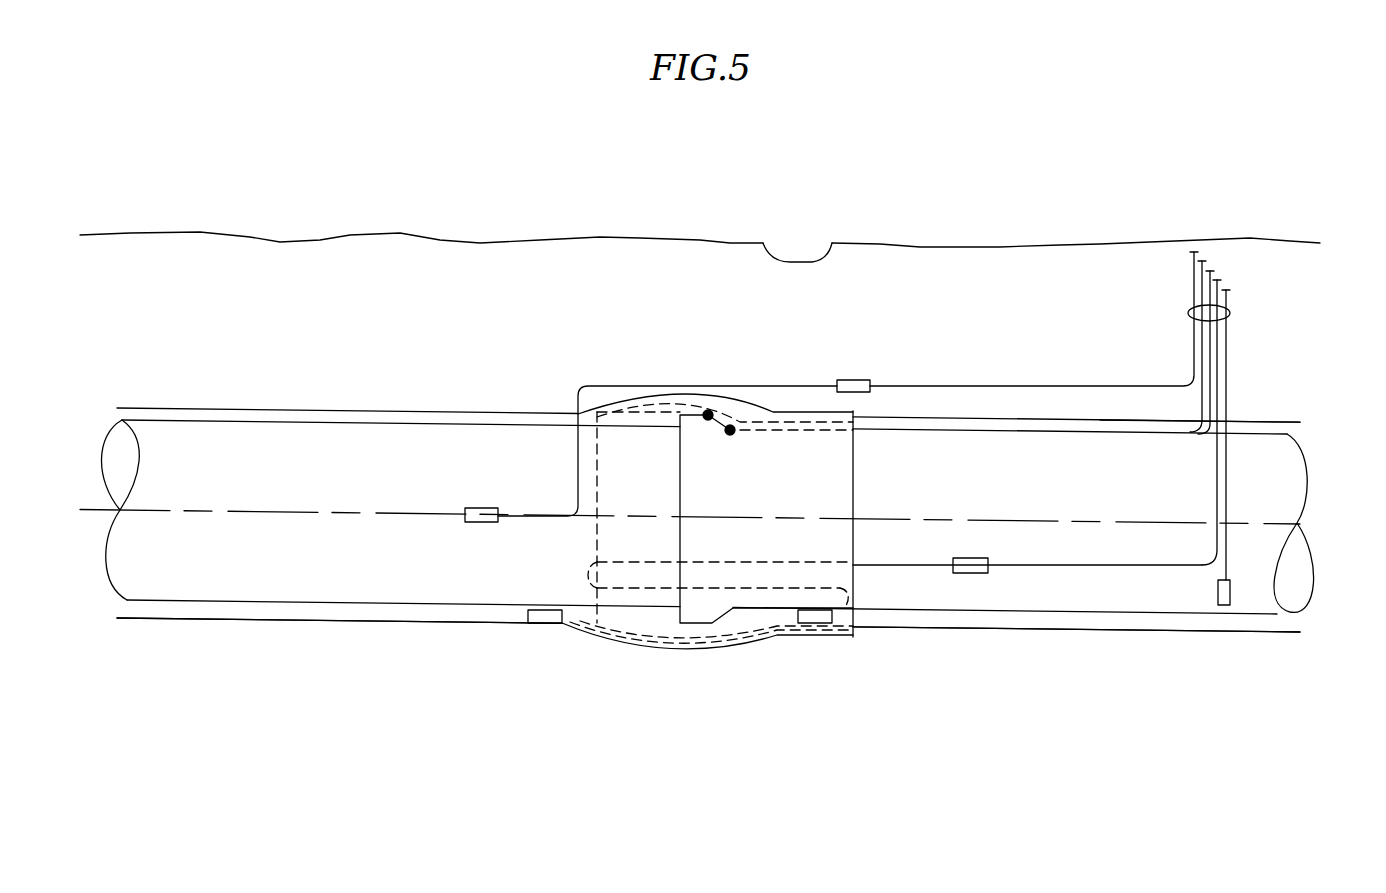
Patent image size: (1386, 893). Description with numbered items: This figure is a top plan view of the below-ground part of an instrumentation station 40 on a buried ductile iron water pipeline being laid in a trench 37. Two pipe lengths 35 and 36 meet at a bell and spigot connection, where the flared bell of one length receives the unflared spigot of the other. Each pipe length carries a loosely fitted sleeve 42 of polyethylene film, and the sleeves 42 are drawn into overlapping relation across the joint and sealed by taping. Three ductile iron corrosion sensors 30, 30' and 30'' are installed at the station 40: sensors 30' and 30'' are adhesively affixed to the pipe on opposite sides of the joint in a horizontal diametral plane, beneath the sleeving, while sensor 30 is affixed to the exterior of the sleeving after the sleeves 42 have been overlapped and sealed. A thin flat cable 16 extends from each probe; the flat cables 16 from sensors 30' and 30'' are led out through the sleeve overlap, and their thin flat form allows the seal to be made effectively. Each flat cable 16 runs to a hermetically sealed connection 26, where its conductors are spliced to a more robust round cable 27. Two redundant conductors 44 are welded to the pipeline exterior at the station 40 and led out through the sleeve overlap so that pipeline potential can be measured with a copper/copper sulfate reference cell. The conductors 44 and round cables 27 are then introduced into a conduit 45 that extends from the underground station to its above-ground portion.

The flat cable 16 is at (608, 385).
The hermetically sealed connection 26 is at (860, 380).
The round cable 27 is at (982, 386).
The ductile iron corrosion sensor 30 is at (445, 491).
The ductile iron corrosion sensor 30' is at (524, 680).
The ductile iron corrosion sensor 30'' is at (840, 681).
The pipe length 35 is at (300, 577).
The pipe length 36 is at (1282, 475).
The trench 37 is at (832, 243).
The instrumentation station 40 is at (663, 682).
The polyethylene film sleeve 42 is at (373, 622).
The conductors 44 is at (1207, 402).
The conduit 45 is at (1230, 312).